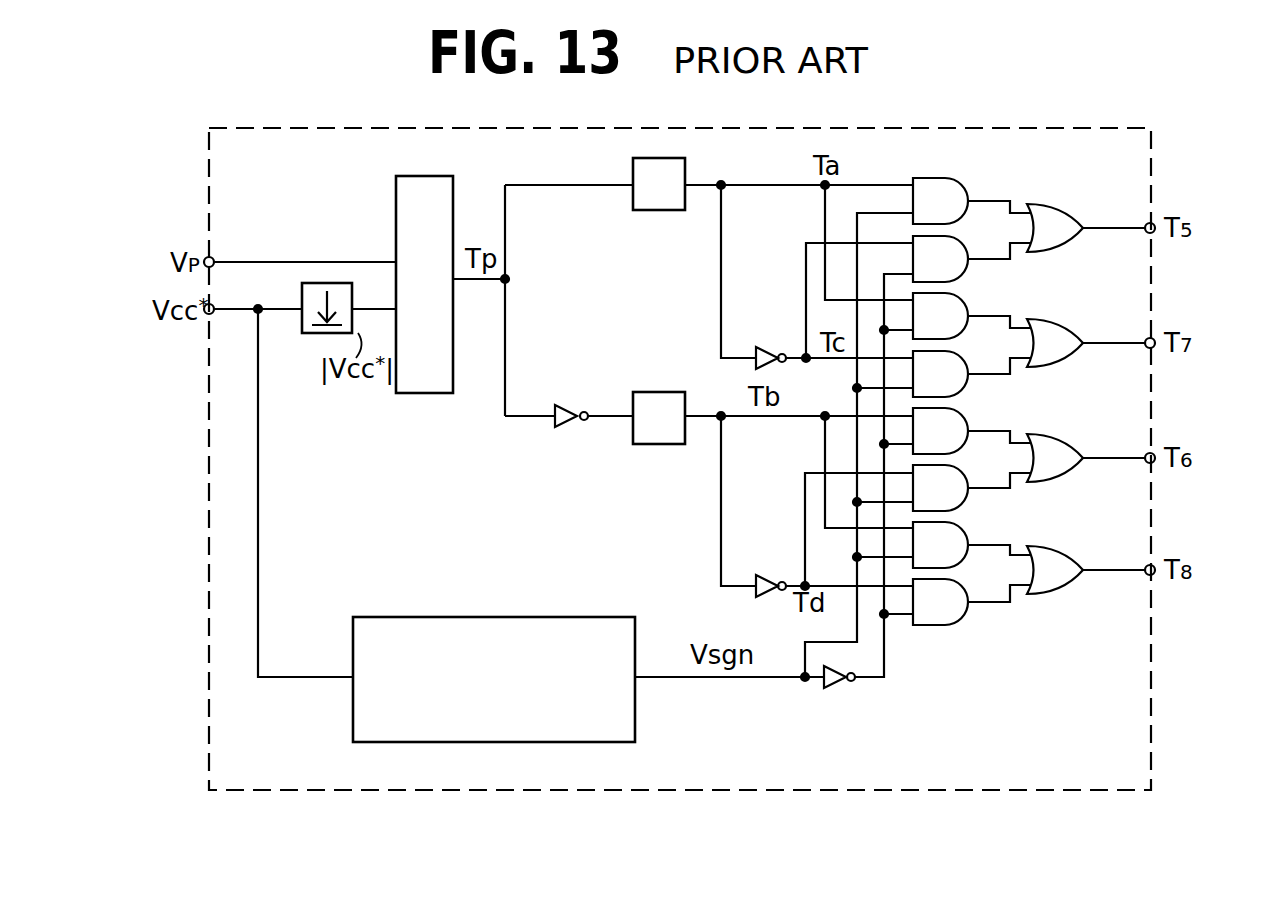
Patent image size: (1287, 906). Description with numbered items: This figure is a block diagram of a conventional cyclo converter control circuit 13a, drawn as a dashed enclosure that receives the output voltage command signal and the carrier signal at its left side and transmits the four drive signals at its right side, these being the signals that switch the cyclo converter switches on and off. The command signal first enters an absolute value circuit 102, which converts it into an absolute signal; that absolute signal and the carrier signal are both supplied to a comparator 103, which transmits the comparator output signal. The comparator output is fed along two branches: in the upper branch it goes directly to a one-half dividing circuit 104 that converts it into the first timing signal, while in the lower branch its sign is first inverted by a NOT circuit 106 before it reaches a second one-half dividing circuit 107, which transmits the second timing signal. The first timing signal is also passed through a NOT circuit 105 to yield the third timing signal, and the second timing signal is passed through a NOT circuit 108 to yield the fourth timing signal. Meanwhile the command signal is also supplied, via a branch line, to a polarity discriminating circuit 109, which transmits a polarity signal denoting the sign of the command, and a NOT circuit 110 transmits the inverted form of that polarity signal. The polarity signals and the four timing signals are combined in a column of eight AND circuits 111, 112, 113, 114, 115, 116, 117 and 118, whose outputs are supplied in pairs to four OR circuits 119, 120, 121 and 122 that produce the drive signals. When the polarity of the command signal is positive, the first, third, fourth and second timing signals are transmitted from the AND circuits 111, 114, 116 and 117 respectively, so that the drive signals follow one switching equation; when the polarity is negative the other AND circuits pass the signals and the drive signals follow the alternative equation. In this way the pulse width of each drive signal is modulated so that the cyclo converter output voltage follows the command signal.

The cyclo converter control circuit 13a is at (1151, 128).
The absolute value circuit 102 is at (300, 296).
The comparator 103 is at (394, 195).
The ½ dividing circuit 104 is at (631, 172).
The NOT circuit 105 is at (768, 346).
The NOT circuit 106 is at (570, 405).
The ½ dividing circuit 107 is at (662, 391).
The NOT circuit 108 is at (768, 574).
The polarity discriminating circuit 109 is at (503, 616).
The NOT circuit 110 is at (836, 690).
The AND circuit 111 is at (947, 178).
The AND circuit 112 is at (947, 236).
The AND circuit 113 is at (950, 293).
The AND circuit 114 is at (950, 350).
The AND circuit 115 is at (950, 407).
The AND circuit 116 is at (950, 465).
The AND circuit 117 is at (950, 522).
The AND circuit 118 is at (952, 622).
The OR circuit 119 is at (1048, 205).
The OR circuit 120 is at (1048, 320).
The OR circuit 121 is at (1048, 435).
The OR circuit 122 is at (1048, 547).